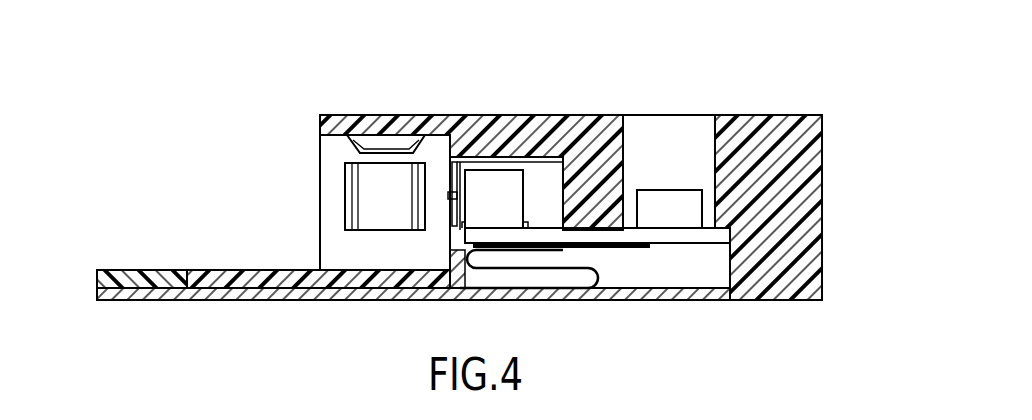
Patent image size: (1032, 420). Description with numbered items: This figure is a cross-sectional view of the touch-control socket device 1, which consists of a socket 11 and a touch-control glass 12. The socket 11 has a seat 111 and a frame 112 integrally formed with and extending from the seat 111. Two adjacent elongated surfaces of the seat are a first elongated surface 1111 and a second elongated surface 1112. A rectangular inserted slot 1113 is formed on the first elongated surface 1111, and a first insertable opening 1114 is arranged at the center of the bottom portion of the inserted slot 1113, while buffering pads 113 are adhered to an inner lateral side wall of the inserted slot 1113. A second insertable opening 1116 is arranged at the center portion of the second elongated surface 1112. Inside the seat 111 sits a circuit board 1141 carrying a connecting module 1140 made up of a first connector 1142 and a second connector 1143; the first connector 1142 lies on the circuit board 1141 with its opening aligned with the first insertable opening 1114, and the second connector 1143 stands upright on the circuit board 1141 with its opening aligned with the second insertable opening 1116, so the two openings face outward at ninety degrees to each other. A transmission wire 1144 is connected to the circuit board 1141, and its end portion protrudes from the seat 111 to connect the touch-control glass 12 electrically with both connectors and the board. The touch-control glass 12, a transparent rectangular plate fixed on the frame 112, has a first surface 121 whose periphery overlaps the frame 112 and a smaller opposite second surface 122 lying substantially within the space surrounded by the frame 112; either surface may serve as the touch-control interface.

The touch-control socket device 1 is at (169, 86).
The socket 11 is at (825, 146).
The seat 111 is at (793, 278).
The first elongated surface 1111 is at (318, 124).
The second elongated surface 1112 is at (360, 115).
The inserted slot 1113 is at (345, 250).
The first insertable opening 1114 is at (451, 166).
The second insertable opening 1116 is at (695, 140).
The frame 112 is at (200, 274).
The buffering pads 113 is at (388, 150).
The connecting module 1140 is at (552, 68).
The circuit board 1141 is at (546, 237).
The first connector 1142 is at (498, 185).
The second connector 1143 is at (670, 205).
The transmission wire 1144 is at (285, 298).
The touch-control glass 12 is at (167, 211).
The first surface 121 is at (100, 328).
The second surface 122 is at (133, 268).